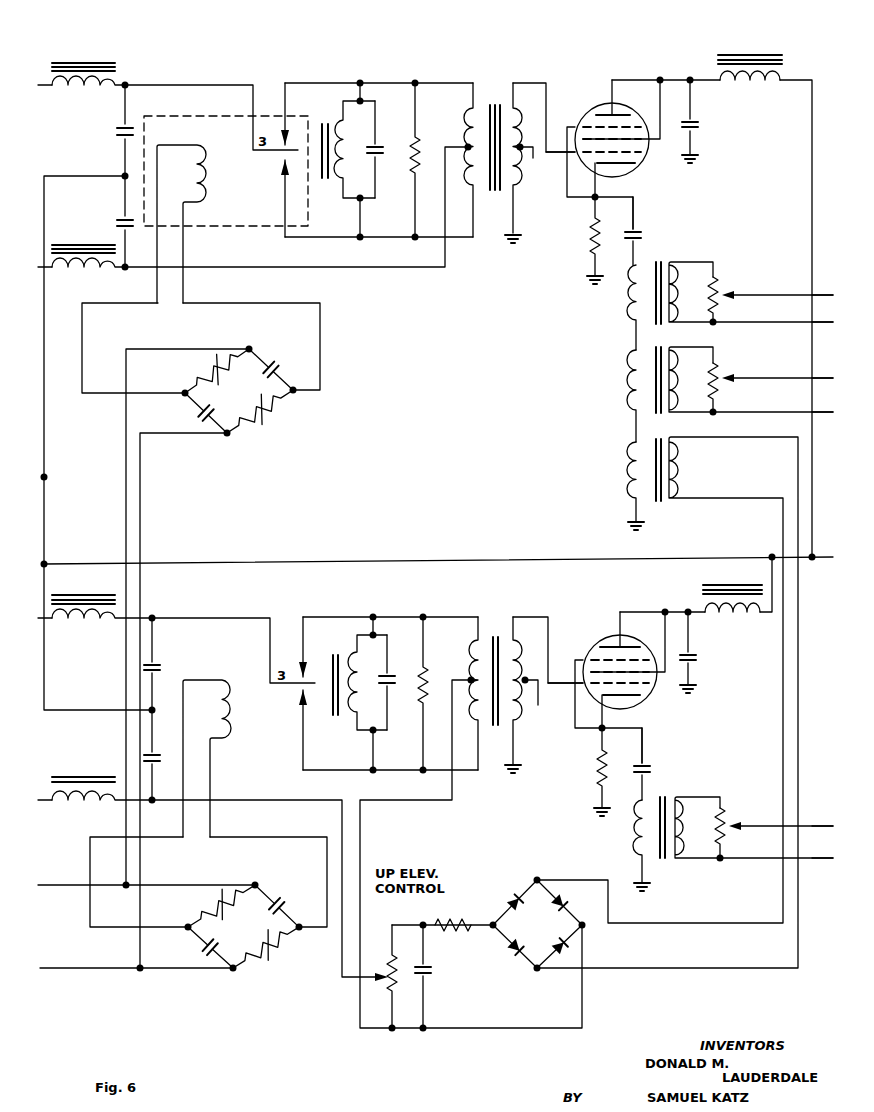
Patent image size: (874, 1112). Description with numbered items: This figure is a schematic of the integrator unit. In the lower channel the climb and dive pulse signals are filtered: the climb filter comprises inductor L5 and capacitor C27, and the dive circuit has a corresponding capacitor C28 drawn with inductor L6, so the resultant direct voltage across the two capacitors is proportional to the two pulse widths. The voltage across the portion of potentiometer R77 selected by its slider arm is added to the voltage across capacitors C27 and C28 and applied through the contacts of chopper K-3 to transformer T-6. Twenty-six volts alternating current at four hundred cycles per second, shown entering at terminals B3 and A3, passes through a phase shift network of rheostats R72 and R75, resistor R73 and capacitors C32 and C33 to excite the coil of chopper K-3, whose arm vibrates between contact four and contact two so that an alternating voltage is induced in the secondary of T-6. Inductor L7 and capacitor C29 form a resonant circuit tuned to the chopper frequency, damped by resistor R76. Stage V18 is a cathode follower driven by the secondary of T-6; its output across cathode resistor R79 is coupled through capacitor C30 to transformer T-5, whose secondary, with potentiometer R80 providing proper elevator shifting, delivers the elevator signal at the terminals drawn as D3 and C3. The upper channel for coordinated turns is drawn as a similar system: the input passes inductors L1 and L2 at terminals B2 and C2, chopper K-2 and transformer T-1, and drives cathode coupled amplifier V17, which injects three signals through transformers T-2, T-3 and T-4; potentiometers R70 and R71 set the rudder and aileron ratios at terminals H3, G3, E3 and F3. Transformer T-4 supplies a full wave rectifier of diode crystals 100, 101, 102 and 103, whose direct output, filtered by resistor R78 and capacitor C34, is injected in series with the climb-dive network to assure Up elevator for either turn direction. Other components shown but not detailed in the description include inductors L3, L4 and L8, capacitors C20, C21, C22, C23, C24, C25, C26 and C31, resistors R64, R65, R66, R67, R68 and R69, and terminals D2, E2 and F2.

The inductor L1 is at (88, 89).
The inductor L2 is at (88, 248).
The tank inductor L3 is at (346, 160).
The plate choke L4 is at (750, 58).
The inductor L5 is at (102, 599).
The inductor L6 is at (102, 775).
The inductor L7 is at (358, 693).
The plate choke L8 is at (732, 590).
The capacitor C20 is at (105, 130).
The capacitor C21 is at (106, 221).
The tank capacitor C22 is at (390, 149).
The bypass capacitor C23 is at (708, 121).
The coupling capacitor C24 is at (650, 231).
The bridge capacitor C25 is at (273, 369).
The bridge capacitor C26 is at (191, 413).
The capacitor C27 is at (165, 664).
The capacitor C28 is at (165, 755).
The capacitor C29 is at (398, 682).
The capacitor C30 is at (658, 764).
The bypass capacitor C31 is at (706, 652).
The capacitor C32 is at (280, 906).
The capacitor C33 is at (206, 947).
The capacitor C34 is at (437, 976).
The bridge potentiometer R64 is at (208, 370).
The bridge resistor R65 is at (239, 381).
The bridge potentiometer R66 is at (265, 410).
The bridge resistor R67 is at (236, 410).
The grid resistor R68 is at (402, 160).
The cathode resistor R69 is at (580, 240).
The potentiometer R70 is at (770, 298).
The potentiometer R71 is at (770, 386).
The rheostat R72 is at (215, 905).
The resistor R73 is at (247, 917).
The rheostat R75 is at (269, 946).
The resistor R76 is at (438, 693).
The potentiometer R77 is at (380, 976).
The resistor R78 is at (453, 917).
The cathode resistor R79 is at (585, 772).
The potentiometer R80 is at (761, 815).
The relay K-2 is at (226, 193).
The chopper K-3 is at (251, 727).
The transformer T-1 is at (519, 153).
The transformer T-2 is at (710, 305).
The transformer T-3 is at (710, 394).
The transformer T-4 is at (667, 702).
The transformer T-5 is at (713, 844).
The transformer T-6 is at (521, 683).
The cathode coupled output amplifier V17 is at (603, 147).
The cathode follower stage V18 is at (606, 682).
The diode crystal 100 is at (506, 898).
The diode crystal 101 is at (567, 902).
The diode crystal 102 is at (555, 943).
The diode crystal 103 is at (507, 947).
The terminal B2 is at (41, 94).
The terminal C2 is at (41, 268).
The terminal D2 is at (436, 523).
The terminal E2 is at (44, 626).
The terminal F2 is at (44, 810).
The terminal B3 (26V AC) B3 is at (146, 886).
The terminal A3 is at (136, 976).
The terminal H3 is at (823, 286).
The terminal G3 is at (823, 319).
The terminal E3 is at (822, 371).
The terminal F3 is at (822, 406).
The terminal D3 is at (819, 818).
The terminal C3 is at (819, 849).